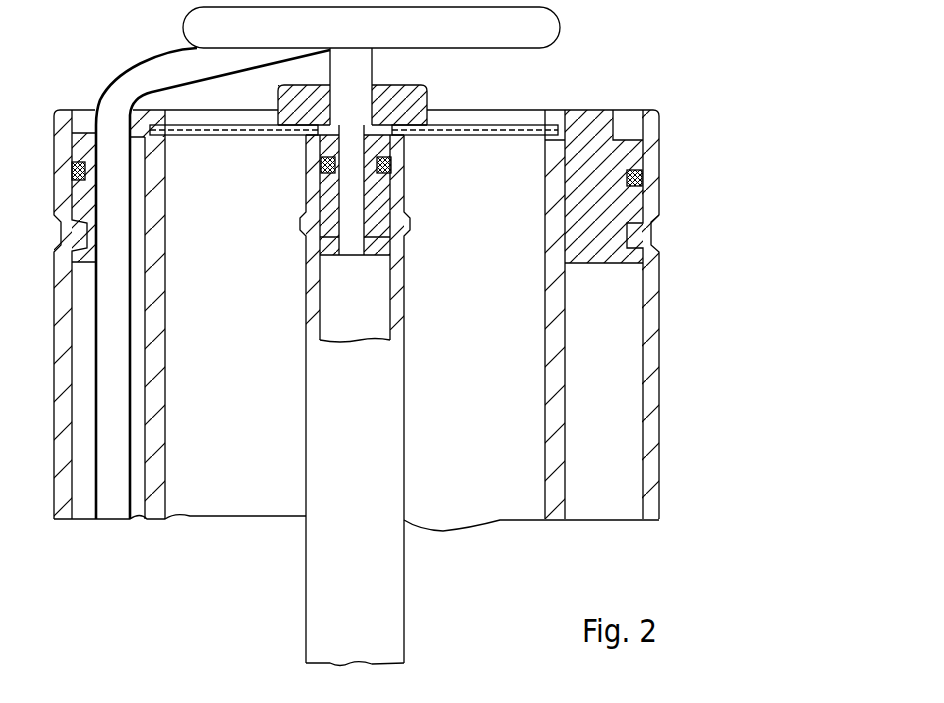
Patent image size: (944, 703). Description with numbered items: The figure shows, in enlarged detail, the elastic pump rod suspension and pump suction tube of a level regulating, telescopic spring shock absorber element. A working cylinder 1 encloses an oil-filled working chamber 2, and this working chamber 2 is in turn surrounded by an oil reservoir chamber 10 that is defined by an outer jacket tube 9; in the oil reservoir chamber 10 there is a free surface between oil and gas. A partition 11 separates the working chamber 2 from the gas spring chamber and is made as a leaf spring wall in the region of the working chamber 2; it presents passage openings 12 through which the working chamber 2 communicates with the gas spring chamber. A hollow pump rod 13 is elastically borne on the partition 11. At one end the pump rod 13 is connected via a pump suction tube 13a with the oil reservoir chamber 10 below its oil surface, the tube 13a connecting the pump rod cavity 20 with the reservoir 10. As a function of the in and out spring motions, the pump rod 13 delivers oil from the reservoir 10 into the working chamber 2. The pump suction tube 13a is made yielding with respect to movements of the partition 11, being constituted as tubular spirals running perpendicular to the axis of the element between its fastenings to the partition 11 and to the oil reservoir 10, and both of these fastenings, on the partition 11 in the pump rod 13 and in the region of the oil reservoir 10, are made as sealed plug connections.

The working cylinder 1 is at (555, 430).
The working chamber 2 is at (485, 454).
The outer jacket tube 9 is at (648, 451).
The oil reservoir chamber 10 is at (82, 412).
The partition 11 is at (452, 137).
The passage openings 12 is at (220, 137).
The hollow pump rod 13 is at (390, 573).
The pump suction tube 13a is at (543, 22).
The pump rod cavity 20 is at (362, 310).